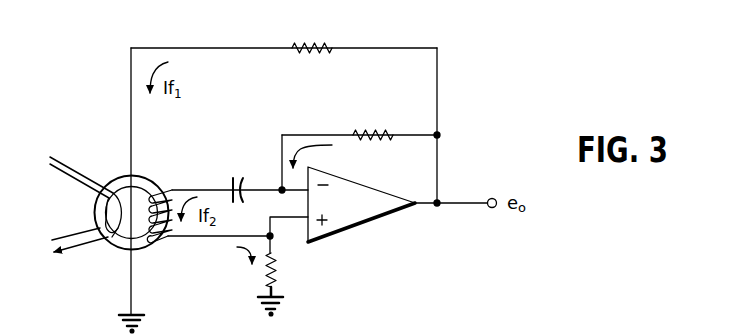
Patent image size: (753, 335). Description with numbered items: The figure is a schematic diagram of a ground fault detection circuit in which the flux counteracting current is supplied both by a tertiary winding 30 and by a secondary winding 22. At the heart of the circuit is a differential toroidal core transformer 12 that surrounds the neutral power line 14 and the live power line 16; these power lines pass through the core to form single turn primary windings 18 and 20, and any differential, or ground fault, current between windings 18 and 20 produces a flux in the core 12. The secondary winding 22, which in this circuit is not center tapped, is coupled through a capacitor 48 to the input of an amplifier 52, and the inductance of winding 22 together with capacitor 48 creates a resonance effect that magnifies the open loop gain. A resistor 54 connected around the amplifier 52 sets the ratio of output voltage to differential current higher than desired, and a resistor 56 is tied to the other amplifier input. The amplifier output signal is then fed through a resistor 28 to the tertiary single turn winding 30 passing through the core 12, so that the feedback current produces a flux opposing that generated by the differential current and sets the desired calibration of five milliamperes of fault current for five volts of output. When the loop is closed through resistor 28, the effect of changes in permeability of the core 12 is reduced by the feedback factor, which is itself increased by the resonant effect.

The differential toroidal core transformer 12 is at (152, 250).
The neutral power line 14 is at (75, 170).
The live power line 16 is at (70, 178).
The single turn primary winding 18 is at (107, 212).
The single turn primary winding 20 is at (125, 240).
The secondary winding 22 is at (170, 188).
The resistor 28 is at (306, 43).
The tertiary single turn winding 30 is at (130, 90).
The capacitor 48 is at (235, 177).
The amplifier 52 is at (358, 205).
The resistor 54 is at (385, 130).
The resistor 56 is at (278, 268).